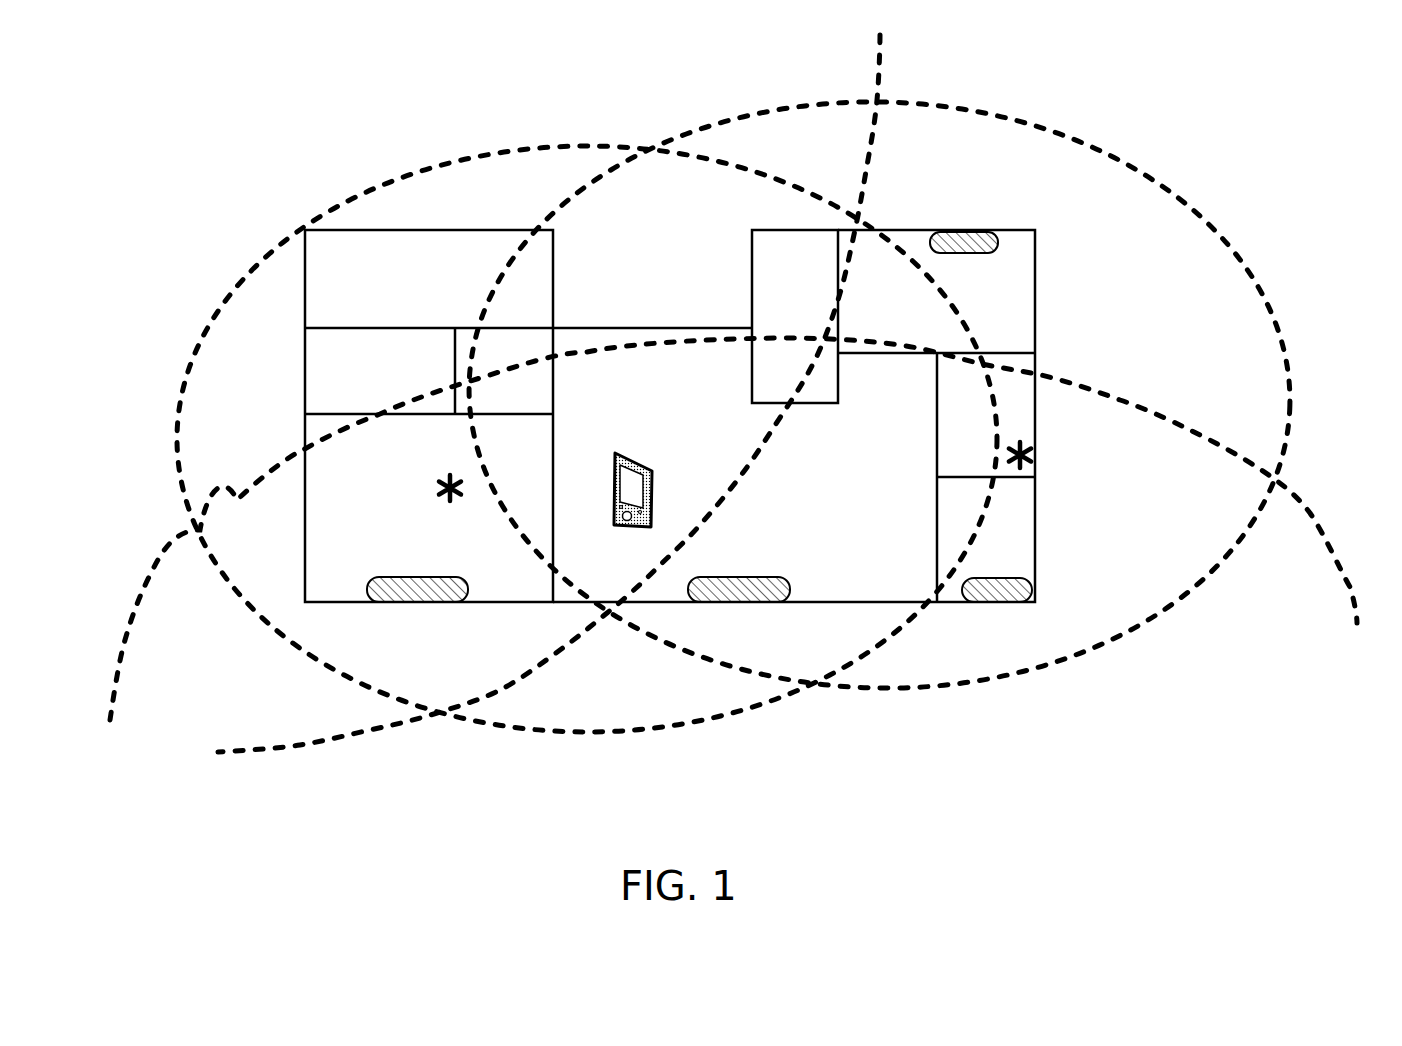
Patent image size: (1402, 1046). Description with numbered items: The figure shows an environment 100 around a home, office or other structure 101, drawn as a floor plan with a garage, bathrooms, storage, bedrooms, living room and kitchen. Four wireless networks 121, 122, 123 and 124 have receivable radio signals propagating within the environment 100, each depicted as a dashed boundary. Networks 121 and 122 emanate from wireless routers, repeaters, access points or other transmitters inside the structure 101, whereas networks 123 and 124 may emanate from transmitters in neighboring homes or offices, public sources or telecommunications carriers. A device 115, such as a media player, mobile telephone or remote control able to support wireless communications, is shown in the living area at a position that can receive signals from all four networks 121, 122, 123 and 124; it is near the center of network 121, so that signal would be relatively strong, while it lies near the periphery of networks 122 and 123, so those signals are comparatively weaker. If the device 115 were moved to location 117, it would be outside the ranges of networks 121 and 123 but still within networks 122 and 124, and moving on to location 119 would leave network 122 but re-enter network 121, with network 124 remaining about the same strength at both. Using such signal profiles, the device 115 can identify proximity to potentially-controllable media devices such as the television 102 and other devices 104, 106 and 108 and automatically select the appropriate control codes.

The environment 100 is at (1162, 103).
The structure 101 is at (1080, 315).
The television 102 is at (450, 592).
The controllable device 104 is at (973, 231).
The controllable device 106 is at (1017, 594).
The controllable device 108 is at (753, 594).
The device 115 is at (648, 487).
The location 117 is at (1028, 466).
The location 119 is at (437, 488).
The wireless network 121 is at (606, 732).
The wireless network 122 is at (1093, 643).
The wireless network 123 is at (376, 732).
The wireless network 124 is at (1203, 436).